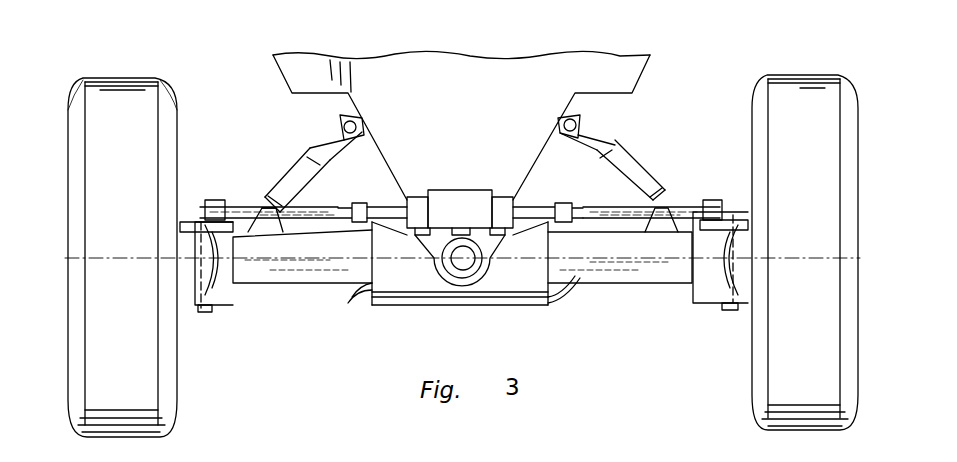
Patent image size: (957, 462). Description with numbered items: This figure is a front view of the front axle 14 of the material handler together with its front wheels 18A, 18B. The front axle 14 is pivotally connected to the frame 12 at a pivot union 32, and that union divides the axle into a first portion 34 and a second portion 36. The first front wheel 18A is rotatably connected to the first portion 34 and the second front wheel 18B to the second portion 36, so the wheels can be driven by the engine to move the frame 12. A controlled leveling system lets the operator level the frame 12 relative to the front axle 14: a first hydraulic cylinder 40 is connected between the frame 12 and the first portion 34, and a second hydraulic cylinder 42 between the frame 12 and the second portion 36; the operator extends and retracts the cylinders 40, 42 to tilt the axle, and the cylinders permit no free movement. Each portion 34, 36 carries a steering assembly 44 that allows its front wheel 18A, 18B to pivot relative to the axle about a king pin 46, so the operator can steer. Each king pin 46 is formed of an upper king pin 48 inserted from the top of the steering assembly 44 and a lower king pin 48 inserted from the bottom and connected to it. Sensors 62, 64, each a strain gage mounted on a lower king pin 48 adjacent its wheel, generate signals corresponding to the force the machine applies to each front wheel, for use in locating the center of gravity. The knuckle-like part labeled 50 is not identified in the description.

The frame 12 is at (476, 117).
The front axle 14 is at (515, 285).
The first front wheel 18A is at (778, 102).
The second front wheel 18B is at (163, 142).
The pivot union 32 is at (452, 270).
The first portion 34 is at (286, 270).
The second portion 36 is at (630, 270).
The first hydraulic cylinder 40 is at (308, 163).
The second hydraulic cylinder 42 is at (647, 143).
The steering assembly 44 is at (218, 196).
The king pin 46 is at (186, 276).
The upper and lower king pin 48 is at (200, 212).
The steering knuckle 50 is at (208, 308).
The sensor 62 is at (197, 312).
The sensor 64 is at (732, 304).